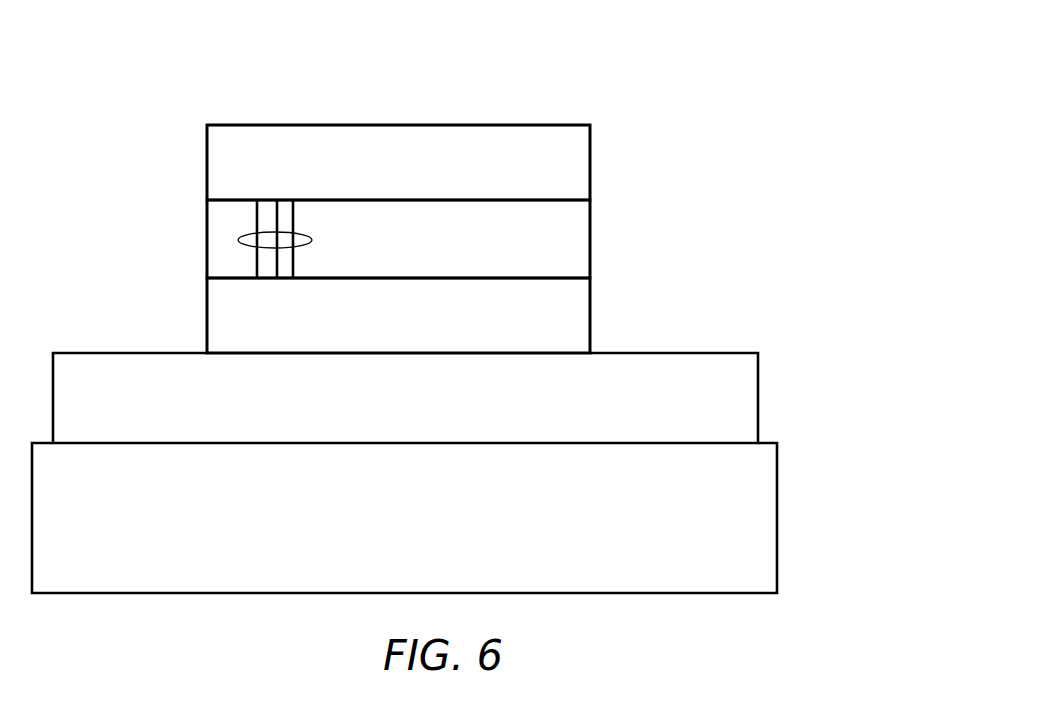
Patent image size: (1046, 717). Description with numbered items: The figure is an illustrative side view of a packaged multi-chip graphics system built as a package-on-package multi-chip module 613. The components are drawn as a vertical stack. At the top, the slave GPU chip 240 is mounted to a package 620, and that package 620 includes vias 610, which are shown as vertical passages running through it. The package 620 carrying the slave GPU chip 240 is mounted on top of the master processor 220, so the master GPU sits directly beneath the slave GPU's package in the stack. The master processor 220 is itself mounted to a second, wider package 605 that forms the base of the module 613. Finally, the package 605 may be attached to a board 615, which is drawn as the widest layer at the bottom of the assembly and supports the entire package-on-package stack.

The package-on-package multi-chip module 613 is at (384, 199).
The slave GPU chip 240 is at (566, 178).
The package 620 is at (566, 250).
The vias 610 is at (240, 239).
The master processor 220 is at (566, 325).
The package 605 is at (608, 412).
The board 615 is at (604, 520).